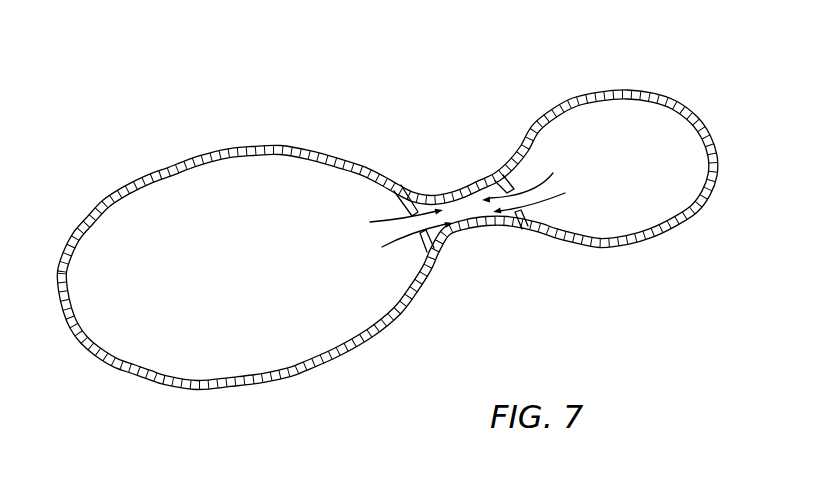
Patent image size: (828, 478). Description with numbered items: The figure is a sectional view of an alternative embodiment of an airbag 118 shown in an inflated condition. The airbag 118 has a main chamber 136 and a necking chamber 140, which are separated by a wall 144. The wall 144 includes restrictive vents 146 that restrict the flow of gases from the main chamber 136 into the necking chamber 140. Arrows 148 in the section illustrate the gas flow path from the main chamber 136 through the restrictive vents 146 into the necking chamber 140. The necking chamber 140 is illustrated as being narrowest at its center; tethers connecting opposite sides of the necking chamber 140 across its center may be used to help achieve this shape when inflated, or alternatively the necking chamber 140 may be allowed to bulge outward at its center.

The airbag 118 is at (665, 94).
The main chamber 136 is at (244, 277).
The necking chamber 140 is at (468, 217).
The wall 144 is at (496, 181).
The restrictive vents 146 is at (412, 217).
The arrows 148 is at (371, 222).